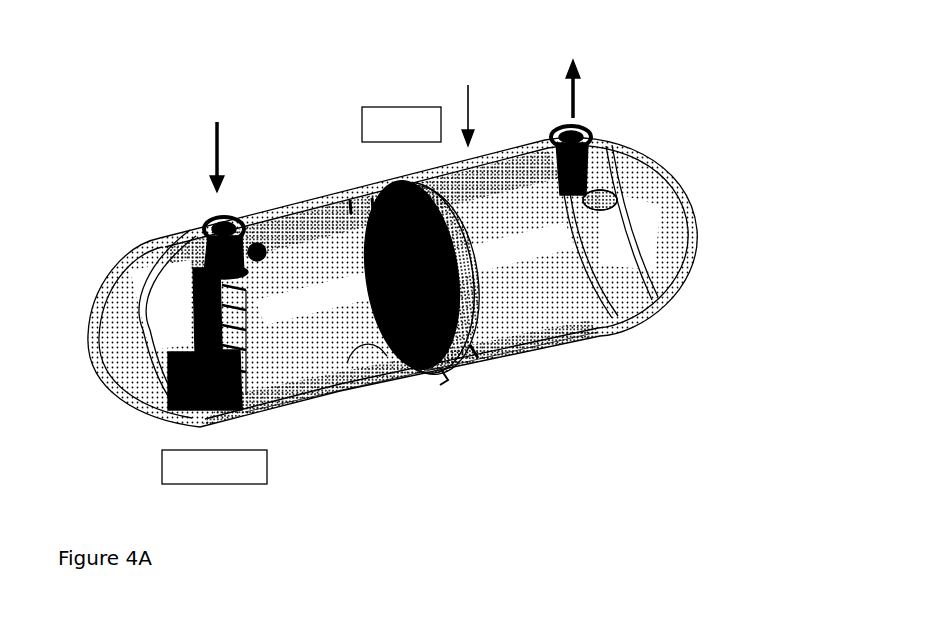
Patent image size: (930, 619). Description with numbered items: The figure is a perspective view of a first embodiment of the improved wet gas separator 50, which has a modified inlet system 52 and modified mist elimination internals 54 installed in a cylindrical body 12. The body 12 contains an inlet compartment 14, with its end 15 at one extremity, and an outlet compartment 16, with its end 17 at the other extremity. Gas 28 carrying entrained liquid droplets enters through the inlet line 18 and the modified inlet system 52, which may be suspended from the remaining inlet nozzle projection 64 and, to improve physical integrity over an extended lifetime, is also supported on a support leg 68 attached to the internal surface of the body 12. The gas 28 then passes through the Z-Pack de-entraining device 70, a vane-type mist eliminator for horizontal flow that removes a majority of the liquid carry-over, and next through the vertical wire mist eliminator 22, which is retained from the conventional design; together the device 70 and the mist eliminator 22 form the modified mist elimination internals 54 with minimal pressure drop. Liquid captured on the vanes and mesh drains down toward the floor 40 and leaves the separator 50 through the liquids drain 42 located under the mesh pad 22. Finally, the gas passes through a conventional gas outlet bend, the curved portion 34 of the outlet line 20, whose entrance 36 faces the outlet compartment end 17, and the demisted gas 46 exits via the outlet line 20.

The cylindrical body 12 is at (322, 200).
The inlet compartment 14 is at (303, 428).
The end of inlet compartment 15 is at (90, 358).
The outlet compartment 16 is at (467, 101).
The end of outlet compartment 17 is at (700, 222).
The inlet line 18 is at (197, 220).
The outlet line 20 is at (597, 137).
The vertical wire mist eliminator 22 is at (537, 343).
The incoming wet gas 28 is at (212, 155).
The curved portion of outlet line 34 is at (603, 133).
The entrance to outlet line 36 is at (615, 190).
The floor 40 is at (403, 378).
The liquids drain 42 is at (447, 365).
The demisted gas 46 is at (568, 100).
The improved wet gas separator 50 is at (790, 252).
The modified inlet system 52 is at (214, 479).
The modified mist elimination internals 54 is at (401, 116).
The inlet nozzle projection 64 is at (167, 237).
The support leg 68 is at (318, 395).
The Z-Pack de-entraining device 70 is at (473, 353).